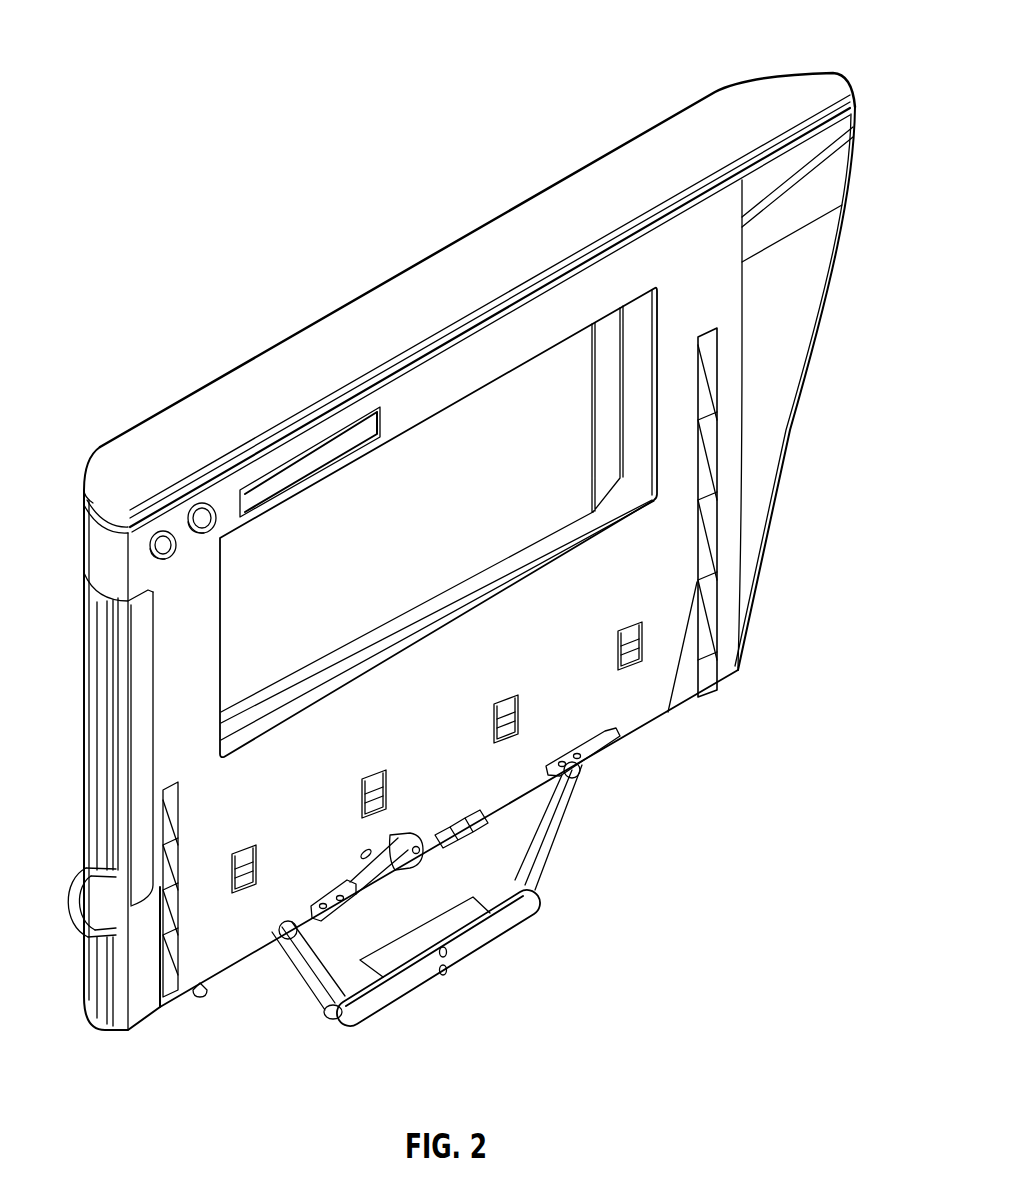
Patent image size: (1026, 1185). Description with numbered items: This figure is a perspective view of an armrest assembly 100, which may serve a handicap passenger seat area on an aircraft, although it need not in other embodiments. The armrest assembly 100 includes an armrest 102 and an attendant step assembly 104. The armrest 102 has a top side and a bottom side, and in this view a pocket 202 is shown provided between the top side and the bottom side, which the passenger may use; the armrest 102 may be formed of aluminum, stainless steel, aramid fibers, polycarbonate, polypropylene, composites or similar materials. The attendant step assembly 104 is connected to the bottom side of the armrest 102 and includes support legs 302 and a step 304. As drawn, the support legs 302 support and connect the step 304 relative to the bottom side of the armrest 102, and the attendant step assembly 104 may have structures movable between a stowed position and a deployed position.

The armrest assembly 100 is at (841, 38).
The armrest 102 is at (227, 392).
The attendant step assembly 104 is at (323, 1033).
The pocket 202 is at (265, 636).
The support legs 302 is at (560, 813).
The step 304 is at (420, 978).